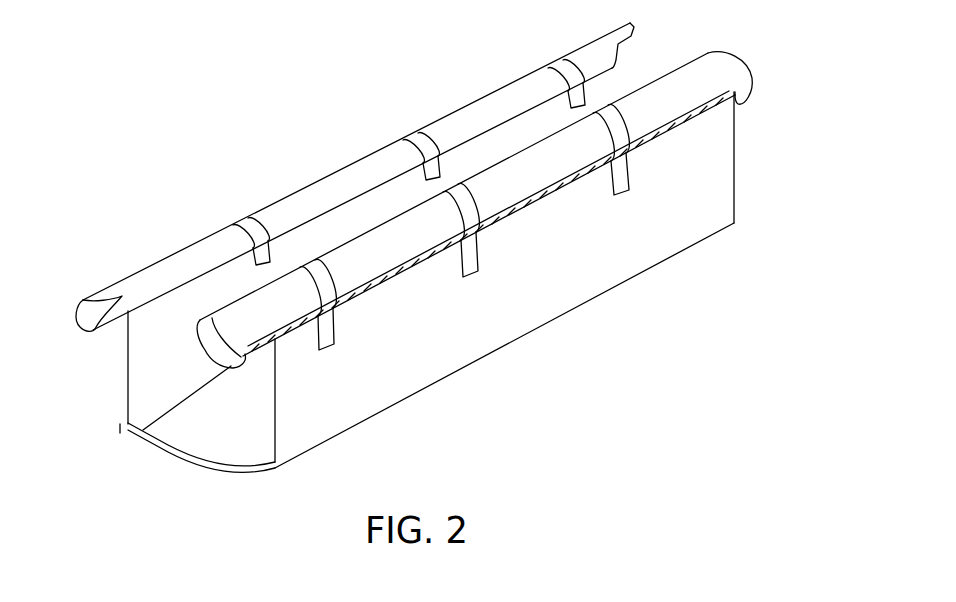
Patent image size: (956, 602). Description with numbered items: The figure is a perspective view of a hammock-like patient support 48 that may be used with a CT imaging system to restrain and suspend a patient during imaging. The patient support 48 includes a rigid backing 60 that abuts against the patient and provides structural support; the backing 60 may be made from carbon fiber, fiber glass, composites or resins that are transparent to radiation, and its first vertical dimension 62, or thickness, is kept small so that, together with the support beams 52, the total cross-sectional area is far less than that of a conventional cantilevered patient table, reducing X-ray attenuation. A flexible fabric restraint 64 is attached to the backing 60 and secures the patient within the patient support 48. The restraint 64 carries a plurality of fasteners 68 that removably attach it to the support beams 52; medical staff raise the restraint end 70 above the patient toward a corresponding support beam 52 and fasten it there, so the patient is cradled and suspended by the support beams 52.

The patient support 48 is at (146, 151).
The support beams 52 is at (313, 197).
The backing 60 is at (236, 441).
The first vertical dimension 62 is at (118, 429).
The restraint 64 is at (715, 196).
The fasteners 68 is at (632, 173).
The restraint end 70 is at (737, 138).